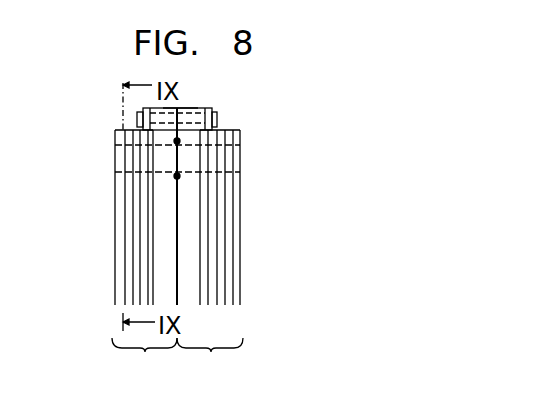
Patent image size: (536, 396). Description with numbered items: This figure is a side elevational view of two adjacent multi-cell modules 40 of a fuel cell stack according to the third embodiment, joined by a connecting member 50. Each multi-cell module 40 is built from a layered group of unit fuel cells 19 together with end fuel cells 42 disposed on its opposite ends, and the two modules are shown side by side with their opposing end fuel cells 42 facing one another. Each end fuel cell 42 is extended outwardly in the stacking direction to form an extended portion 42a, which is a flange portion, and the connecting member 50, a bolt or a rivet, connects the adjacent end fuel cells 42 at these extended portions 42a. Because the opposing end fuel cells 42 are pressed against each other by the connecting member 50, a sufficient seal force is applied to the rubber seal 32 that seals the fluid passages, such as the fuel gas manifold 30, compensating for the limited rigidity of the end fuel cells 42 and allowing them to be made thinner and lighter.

The unit fuel cell 19 is at (125, 253).
The fuel gas manifold 30 is at (210, 172).
The rubber seal 32 is at (118, 172).
The multi-cell module 40 is at (177, 361).
The end fuel cell 42 is at (190, 288).
The extended portion 42a is at (198, 107).
The connecting member 50 is at (215, 118).